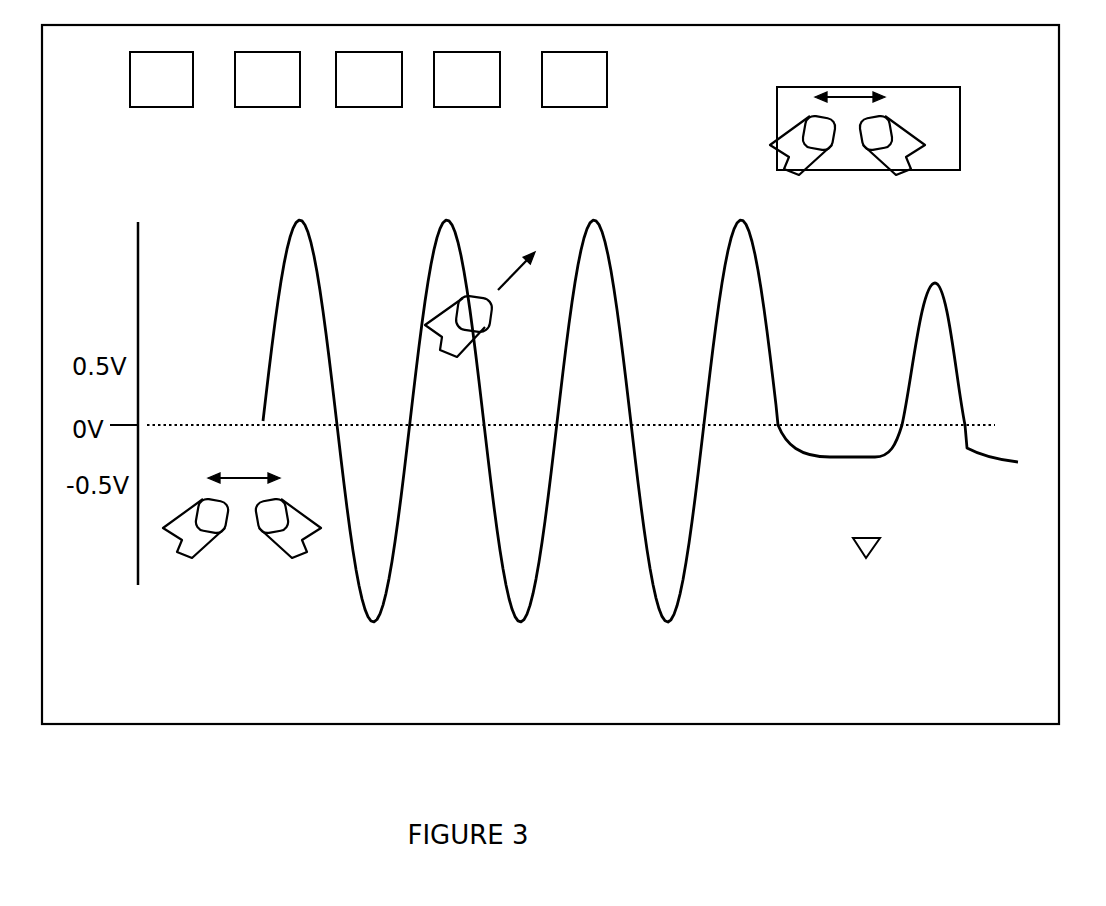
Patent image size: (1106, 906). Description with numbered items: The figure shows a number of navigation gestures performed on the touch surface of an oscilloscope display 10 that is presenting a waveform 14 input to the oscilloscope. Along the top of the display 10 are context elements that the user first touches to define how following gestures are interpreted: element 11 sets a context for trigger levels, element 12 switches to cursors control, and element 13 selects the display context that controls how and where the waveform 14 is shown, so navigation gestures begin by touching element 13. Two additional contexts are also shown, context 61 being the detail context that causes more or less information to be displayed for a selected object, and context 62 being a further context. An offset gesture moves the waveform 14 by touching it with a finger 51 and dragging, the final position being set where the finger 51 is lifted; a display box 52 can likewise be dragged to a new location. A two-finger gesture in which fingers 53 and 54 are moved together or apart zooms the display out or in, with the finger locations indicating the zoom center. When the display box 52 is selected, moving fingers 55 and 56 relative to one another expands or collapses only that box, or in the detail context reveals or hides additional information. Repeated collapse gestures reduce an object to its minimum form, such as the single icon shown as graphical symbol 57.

The display 10 is at (1059, 143).
The element 11 is at (153, 105).
The element 12 is at (267, 105).
The element 13 is at (368, 105).
The context 61 is at (463, 105).
The context 62 is at (572, 105).
The waveform 14 is at (312, 237).
The finger 51 is at (442, 347).
The display box 52 is at (940, 172).
The finger 53 is at (197, 548).
The finger 54 is at (293, 552).
The finger 55 is at (803, 167).
The finger 56 is at (898, 167).
The graphical symbol 57 is at (860, 545).